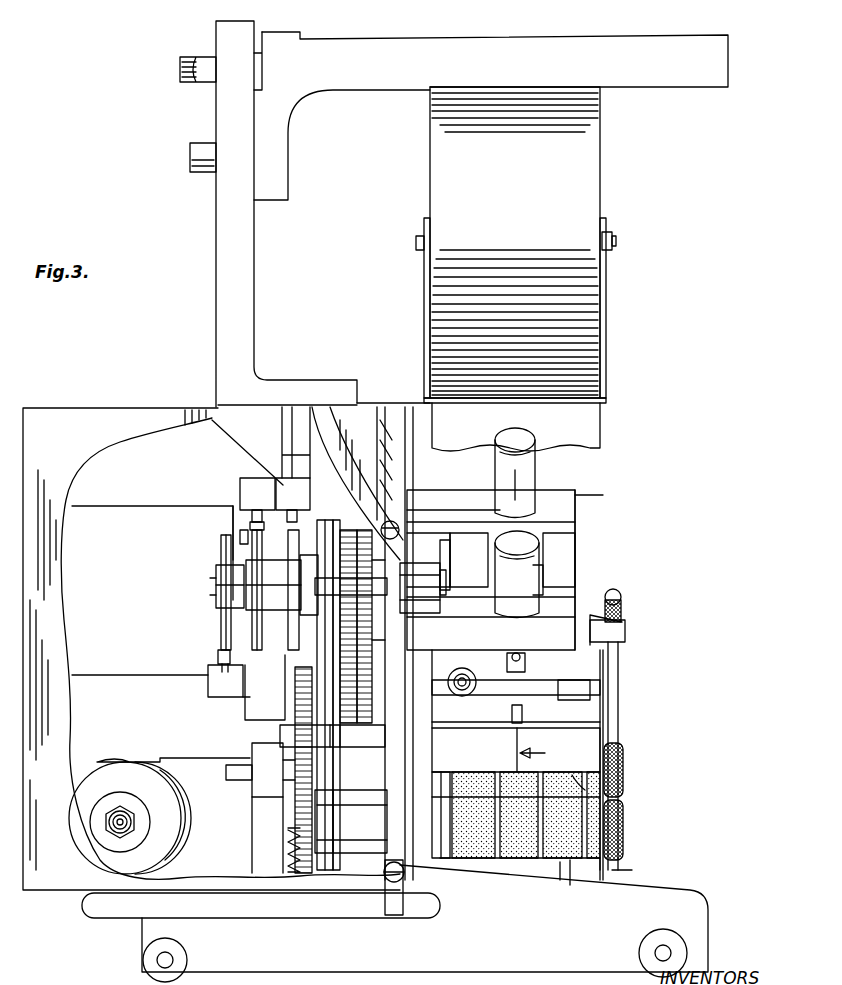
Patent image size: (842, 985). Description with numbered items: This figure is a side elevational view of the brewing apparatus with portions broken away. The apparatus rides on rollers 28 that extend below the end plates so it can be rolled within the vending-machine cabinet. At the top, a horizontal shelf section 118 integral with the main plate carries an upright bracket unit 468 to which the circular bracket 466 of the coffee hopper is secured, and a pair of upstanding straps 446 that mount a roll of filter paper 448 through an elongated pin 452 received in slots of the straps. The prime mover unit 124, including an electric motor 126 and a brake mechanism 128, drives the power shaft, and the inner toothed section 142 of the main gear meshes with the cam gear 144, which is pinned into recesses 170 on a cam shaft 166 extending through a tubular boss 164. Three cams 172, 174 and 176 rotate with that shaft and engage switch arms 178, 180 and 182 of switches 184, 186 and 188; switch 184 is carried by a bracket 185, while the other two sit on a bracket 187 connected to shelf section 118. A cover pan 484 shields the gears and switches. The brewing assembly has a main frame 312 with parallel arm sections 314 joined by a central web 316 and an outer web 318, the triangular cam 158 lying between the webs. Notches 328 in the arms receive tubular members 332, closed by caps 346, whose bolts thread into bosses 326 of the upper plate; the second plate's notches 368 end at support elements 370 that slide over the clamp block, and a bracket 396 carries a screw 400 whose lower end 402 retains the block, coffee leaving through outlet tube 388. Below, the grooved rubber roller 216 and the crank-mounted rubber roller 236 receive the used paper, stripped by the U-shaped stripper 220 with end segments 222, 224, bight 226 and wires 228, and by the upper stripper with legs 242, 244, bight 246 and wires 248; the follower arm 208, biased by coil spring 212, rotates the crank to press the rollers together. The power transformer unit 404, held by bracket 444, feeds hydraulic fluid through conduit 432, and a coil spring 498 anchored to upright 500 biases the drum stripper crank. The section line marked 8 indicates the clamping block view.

The circular bracket 466 is at (440, 42).
The bracket unit 468 is at (250, 252).
The horizontal shelf section 118 is at (372, 405).
The roll of filter paper 448 is at (602, 180).
The upstanding straps 446 is at (426, 323).
The elongated pin 452 is at (616, 241).
The cover pan 484 is at (104, 408).
The prime mover unit 124 is at (110, 488).
The electric motor 126 is at (128, 518).
The bracket 187 is at (282, 445).
The switch 186 is at (240, 487).
The switch 188 is at (290, 492).
The switch arm 182 is at (328, 512).
The main frame 312 is at (432, 476).
The cam 172 is at (221, 552).
The cam 174 is at (245, 540).
The switch arm 180 is at (250, 520).
The cam 176 is at (298, 585).
The inner externally toothed section 142 is at (372, 685).
The cam gear 144 is at (390, 633).
The third tubular boss 164 is at (435, 566).
The cam shaft 166 is at (447, 582).
The recesses 170 is at (420, 588).
The arm sections 314 is at (464, 496).
The caps 346 is at (528, 440).
The tubular member 332 is at (525, 480).
The central web portion 316 is at (455, 533).
The outer web 318 is at (572, 545).
The triangular cam 158 is at (545, 570).
The section line 8 is at (567, 624).
The notches 328 is at (620, 583).
The screw 400 is at (625, 612).
The bracket 396 is at (625, 628).
The lower end portion 402 is at (622, 628).
The internally threaded bosses 326 is at (526, 660).
The notches 368 is at (590, 692).
The coffee outlet tube 388 is at (512, 713).
The transverse support elements 370 is at (575, 706).
The rectangular bight 246 is at (595, 740).
The leg 242 is at (444, 775).
The rubber roller 236 is at (470, 776).
The end segment 222 is at (463, 800).
The stripper wires 228 is at (560, 810).
The stripper wires 248 is at (575, 778).
The leg 244 is at (622, 778).
The end segment 224 is at (622, 828).
The paper filter stripper 220 is at (618, 874).
The rectangular bight 226 is at (595, 880).
The rubber roller 216 is at (505, 860).
The switch arm 178 is at (215, 656).
The switch 184 is at (208, 688).
The brake mechanism 128 is at (265, 687).
The coil spring 212 is at (296, 700).
The bracket 185 is at (245, 712).
The follower arm 208 is at (313, 757).
The upright 500 is at (290, 812).
The coil spring 498 is at (288, 852).
The power transformer unit 404 is at (128, 736).
The bracket 444 is at (166, 760).
The conduit 432 is at (272, 910).
The rollers 28 is at (180, 950).